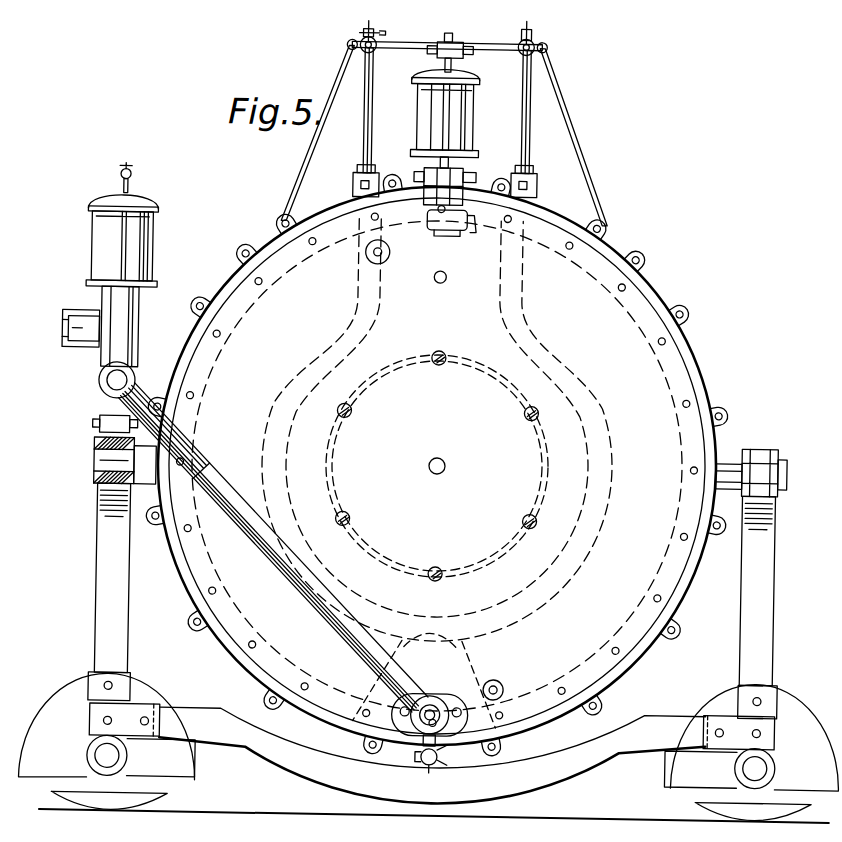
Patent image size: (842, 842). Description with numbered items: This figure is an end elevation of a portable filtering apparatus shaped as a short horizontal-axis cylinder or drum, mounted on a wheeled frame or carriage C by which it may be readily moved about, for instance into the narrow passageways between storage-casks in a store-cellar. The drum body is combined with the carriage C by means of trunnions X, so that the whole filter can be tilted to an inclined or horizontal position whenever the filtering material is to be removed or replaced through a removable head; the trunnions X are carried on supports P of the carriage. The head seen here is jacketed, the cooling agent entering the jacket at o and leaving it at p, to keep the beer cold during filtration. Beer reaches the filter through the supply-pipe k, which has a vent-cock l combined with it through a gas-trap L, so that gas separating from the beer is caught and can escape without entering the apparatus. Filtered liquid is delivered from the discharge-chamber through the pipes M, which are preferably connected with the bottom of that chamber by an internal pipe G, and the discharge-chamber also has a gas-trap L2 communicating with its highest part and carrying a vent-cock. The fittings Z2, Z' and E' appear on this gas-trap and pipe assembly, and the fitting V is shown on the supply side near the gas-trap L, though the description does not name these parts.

The vent-cock l is at (128, 174).
The gas-trap L is at (150, 258).
The valve V is at (136, 335).
The trunnions X is at (86, 472).
The supply-pipe k is at (206, 458).
The jacket outlet p is at (385, 254).
The pipes M is at (445, 121).
The gas-trap L2 is at (442, 113).
The valve fitting Z2 is at (458, 58).
The valve Z' is at (445, 180).
The pipe connection E' is at (462, 199).
The internal pipe G is at (424, 680).
The jacket inlet o is at (508, 687).
The carriage C is at (432, 757).
The pedestal P is at (115, 612).